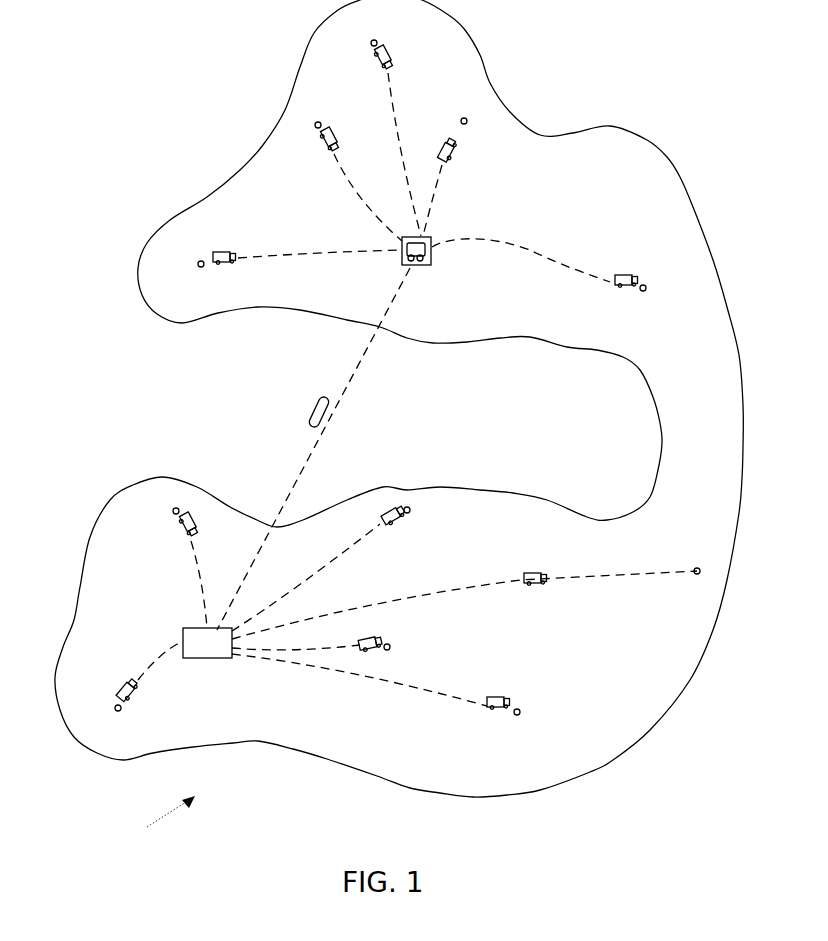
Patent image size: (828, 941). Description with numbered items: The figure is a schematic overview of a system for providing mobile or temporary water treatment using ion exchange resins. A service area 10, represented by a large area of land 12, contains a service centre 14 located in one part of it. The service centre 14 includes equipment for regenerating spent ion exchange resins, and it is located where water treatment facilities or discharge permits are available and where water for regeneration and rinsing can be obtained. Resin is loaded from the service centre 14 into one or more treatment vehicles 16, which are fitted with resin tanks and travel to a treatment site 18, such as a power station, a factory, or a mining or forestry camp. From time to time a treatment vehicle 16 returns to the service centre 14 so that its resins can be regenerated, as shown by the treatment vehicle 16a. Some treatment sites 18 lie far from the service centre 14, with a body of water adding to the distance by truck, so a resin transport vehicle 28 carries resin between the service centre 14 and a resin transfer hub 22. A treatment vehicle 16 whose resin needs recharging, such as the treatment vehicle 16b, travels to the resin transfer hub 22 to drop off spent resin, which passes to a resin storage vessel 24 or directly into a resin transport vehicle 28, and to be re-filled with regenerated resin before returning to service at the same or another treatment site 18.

The service area 10 is at (159, 818).
The area of land 12 is at (378, 780).
The service centre 14 is at (207, 660).
The treatment vehicle 16 is at (630, 272).
The treatment vehicle 16a is at (548, 571).
The treatment vehicle 16b is at (440, 147).
The treatment site 18 is at (464, 117).
The resin transfer hub 22 is at (414, 237).
The resin storage vessel 24 is at (401, 264).
The resin transport vehicle 28 is at (311, 409).